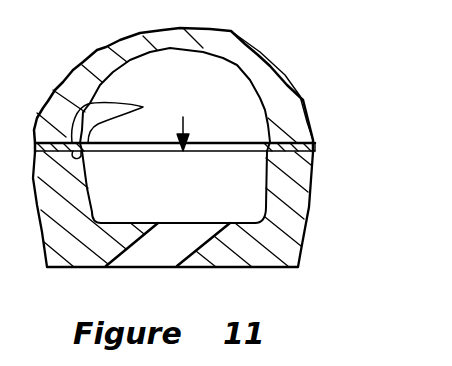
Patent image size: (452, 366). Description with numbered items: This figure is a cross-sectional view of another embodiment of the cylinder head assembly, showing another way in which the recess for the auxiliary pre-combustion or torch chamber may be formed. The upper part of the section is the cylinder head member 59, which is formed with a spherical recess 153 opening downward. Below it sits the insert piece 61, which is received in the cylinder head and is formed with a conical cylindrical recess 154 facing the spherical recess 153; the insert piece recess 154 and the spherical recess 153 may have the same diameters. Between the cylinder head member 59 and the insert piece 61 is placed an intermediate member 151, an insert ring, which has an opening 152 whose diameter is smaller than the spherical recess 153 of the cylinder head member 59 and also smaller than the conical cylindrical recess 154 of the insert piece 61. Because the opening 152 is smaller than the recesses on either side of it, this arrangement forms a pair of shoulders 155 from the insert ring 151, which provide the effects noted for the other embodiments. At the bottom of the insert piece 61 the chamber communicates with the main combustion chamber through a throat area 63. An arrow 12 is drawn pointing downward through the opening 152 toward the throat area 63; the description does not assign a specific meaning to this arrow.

The cylinder head member 59 is at (258, 76).
The spherical recess 153 is at (249, 104).
The intermediate member 151 is at (310, 130).
The flow direction arrow 12 is at (200, 120).
The shoulders 155 is at (124, 108).
The opening 152 is at (102, 152).
The conical cylindrical recess 154 is at (260, 180).
The insert piece 61 is at (298, 223).
The throat area 63 is at (205, 240).